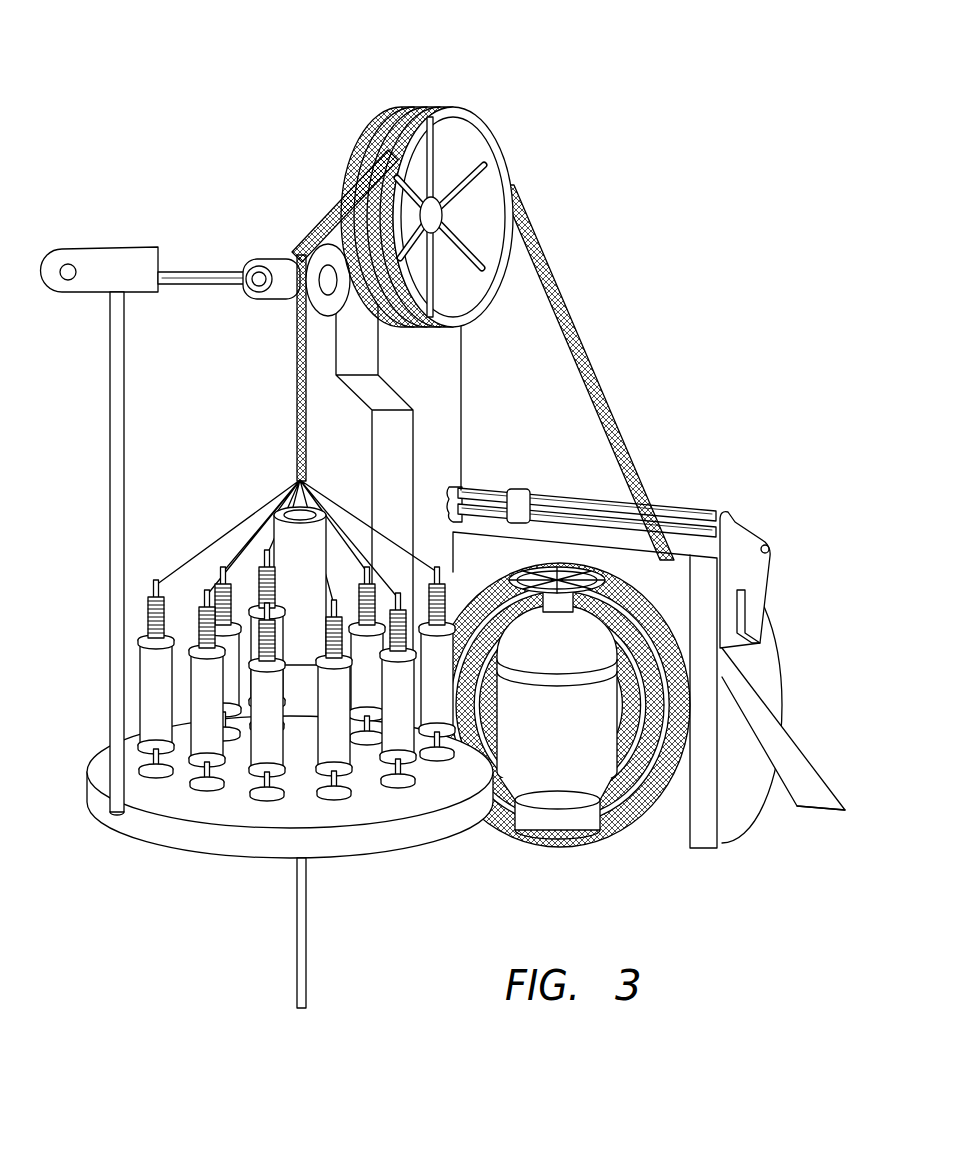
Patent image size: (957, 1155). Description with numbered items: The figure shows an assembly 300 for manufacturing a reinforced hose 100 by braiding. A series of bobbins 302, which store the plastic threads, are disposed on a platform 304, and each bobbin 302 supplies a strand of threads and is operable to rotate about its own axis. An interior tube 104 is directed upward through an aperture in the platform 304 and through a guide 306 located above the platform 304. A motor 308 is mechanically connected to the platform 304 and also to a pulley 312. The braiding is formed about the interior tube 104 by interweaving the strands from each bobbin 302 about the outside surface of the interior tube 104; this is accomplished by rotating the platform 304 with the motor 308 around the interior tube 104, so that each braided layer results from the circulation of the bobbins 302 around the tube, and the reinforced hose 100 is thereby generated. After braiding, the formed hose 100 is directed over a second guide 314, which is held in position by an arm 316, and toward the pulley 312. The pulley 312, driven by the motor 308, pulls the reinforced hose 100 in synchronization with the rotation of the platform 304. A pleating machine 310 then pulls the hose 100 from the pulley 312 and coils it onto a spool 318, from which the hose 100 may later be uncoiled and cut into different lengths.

The assembly 300 is at (507, 66).
The reinforced hose 100 is at (332, 224).
The interior tube 104 is at (306, 918).
The bobbins 302 is at (148, 684).
The platform 304 is at (152, 840).
The guide 306 is at (282, 536).
The motor 308 is at (542, 800).
The pleating machine 310 is at (694, 510).
The pulley 312 is at (514, 150).
The second guide 314 is at (264, 258).
The arm 316 is at (108, 248).
The spool 318 is at (735, 812).